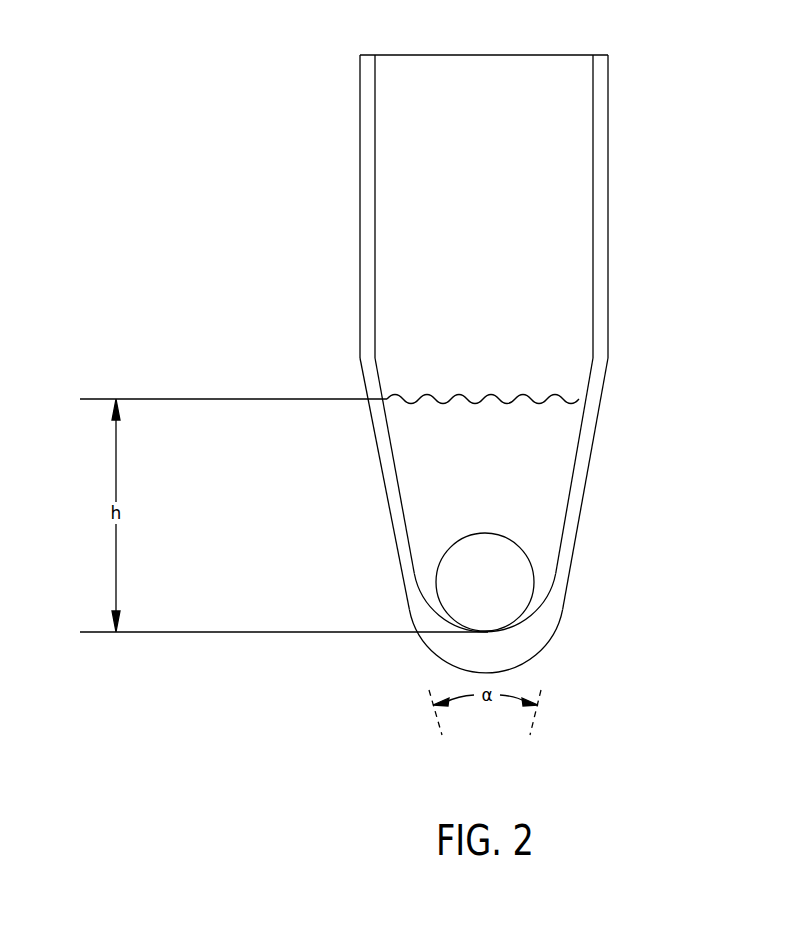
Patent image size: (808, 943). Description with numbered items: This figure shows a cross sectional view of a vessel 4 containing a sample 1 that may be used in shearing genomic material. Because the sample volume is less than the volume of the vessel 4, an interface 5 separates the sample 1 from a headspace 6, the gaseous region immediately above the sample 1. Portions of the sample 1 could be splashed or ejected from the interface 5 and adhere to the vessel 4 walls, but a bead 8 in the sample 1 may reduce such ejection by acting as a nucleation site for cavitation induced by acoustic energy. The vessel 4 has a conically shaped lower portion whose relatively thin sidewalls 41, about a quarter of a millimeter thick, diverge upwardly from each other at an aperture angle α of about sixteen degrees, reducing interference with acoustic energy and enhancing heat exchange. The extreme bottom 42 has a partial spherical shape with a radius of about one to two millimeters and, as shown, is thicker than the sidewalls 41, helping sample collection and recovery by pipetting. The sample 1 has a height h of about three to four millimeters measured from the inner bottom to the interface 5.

The vessel 4 is at (559, 363).
The headspace 6 is at (570, 233).
The interface 5 is at (575, 398).
The sample 1 is at (481, 528).
The sidewalls 41 is at (402, 543).
The extreme bottom 42 is at (428, 640).
The bead 8 is at (503, 615).